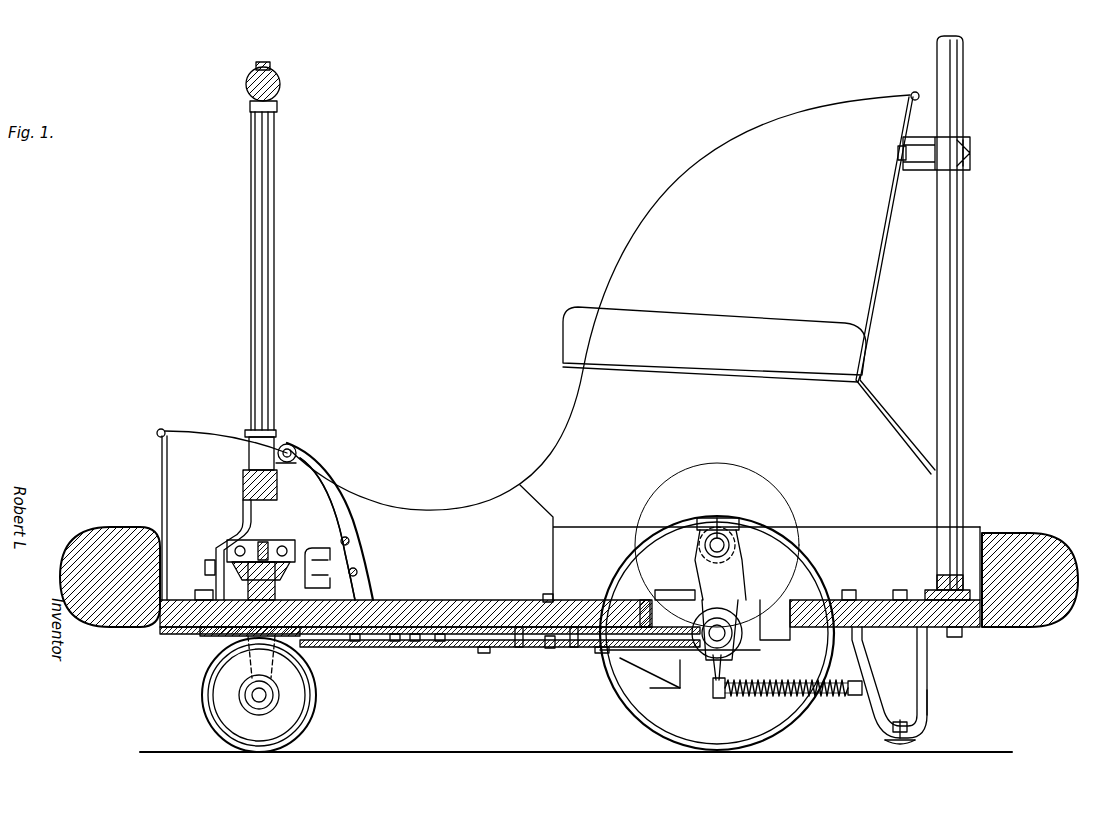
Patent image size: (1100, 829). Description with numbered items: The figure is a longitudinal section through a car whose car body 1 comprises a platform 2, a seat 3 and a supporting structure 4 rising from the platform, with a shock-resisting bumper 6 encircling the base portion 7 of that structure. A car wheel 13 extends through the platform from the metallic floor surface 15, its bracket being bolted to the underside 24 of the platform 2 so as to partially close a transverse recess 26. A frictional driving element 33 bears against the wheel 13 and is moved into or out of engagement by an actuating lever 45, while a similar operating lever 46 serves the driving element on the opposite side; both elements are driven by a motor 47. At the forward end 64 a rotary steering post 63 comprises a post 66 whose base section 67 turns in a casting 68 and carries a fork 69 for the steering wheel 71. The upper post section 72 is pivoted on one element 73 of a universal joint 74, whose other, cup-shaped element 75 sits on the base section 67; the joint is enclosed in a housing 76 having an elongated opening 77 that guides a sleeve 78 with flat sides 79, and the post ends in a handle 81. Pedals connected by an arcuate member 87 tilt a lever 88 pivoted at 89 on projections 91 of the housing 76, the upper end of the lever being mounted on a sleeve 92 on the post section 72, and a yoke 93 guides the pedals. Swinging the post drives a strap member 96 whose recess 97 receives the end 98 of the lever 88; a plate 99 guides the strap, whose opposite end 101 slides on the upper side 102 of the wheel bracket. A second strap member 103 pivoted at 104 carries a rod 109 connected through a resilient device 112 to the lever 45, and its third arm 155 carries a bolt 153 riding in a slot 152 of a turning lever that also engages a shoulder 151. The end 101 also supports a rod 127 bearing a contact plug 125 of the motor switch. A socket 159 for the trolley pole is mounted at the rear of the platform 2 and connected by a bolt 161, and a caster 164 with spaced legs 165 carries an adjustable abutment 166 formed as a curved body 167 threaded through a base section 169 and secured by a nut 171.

The car body 1 is at (635, 347).
The platform 2 is at (486, 600).
The seat 3 is at (654, 320).
The supporting structure 4 is at (847, 283).
The shock-resisting bumper 6 is at (122, 528).
The base portion 7 is at (984, 530).
The wheel 13 is at (830, 588).
The metallic floor surface 15 is at (482, 751).
The underside of the platform 24 is at (550, 606).
The recess 26 is at (766, 598).
The frictional driving element 33 is at (730, 548).
The actuating lever 45 is at (718, 698).
The operating lever 46 is at (740, 568).
The driving motor 47 is at (785, 495).
The rotary steering post 63 is at (275, 304).
The forward end of the car 64 is at (197, 592).
The steering post 66 is at (250, 403).
The base section of the post 67 is at (236, 636).
The casting 68 is at (198, 636).
The fork 69 is at (279, 692).
The steering wheel 71 is at (317, 692).
The upper post section 72 is at (251, 272).
The universal joint element 73 is at (286, 540).
The universal joint 74 is at (280, 546).
The cup-shaped element 75 is at (300, 549).
The housing 76 is at (238, 506).
The opening 77 is at (244, 480).
The sleeve 78 is at (297, 457).
The flat sides 79 is at (292, 476).
The handle 81 is at (282, 87).
The arcuate member 87 is at (332, 581).
The lever 88 is at (352, 566).
The pivot 89 is at (350, 541).
The projections 91 is at (350, 566).
The sleeve 92 is at (276, 447).
The yoke 93 is at (208, 560).
The strap member 96 is at (441, 642).
The recess 97 is at (356, 642).
The end of the lever 98 is at (395, 642).
The plate 99 is at (415, 642).
The opposite end of the strap 101 is at (620, 600).
The upper side of the bracket member 102 is at (690, 598).
The second strap member 103 is at (485, 654).
The pivot 104 is at (519, 648).
The rod 109 is at (713, 660).
The resilient device 112 is at (838, 694).
The metallic plug element 125 is at (772, 697).
The rod 127 is at (681, 665).
The shoulder 151 is at (655, 652).
The second slot 152 is at (602, 654).
The bolt 153 is at (572, 650).
The third arm 155 is at (548, 650).
The socket 159 is at (930, 588).
The bolt 161 is at (960, 636).
The caster 164 is at (926, 700).
The spaced legs 165 is at (918, 660).
The adjustable abutment 166 is at (918, 742).
The curved body 167 is at (890, 744).
The threaded base section 169 is at (892, 730).
The nut 171 is at (902, 722).